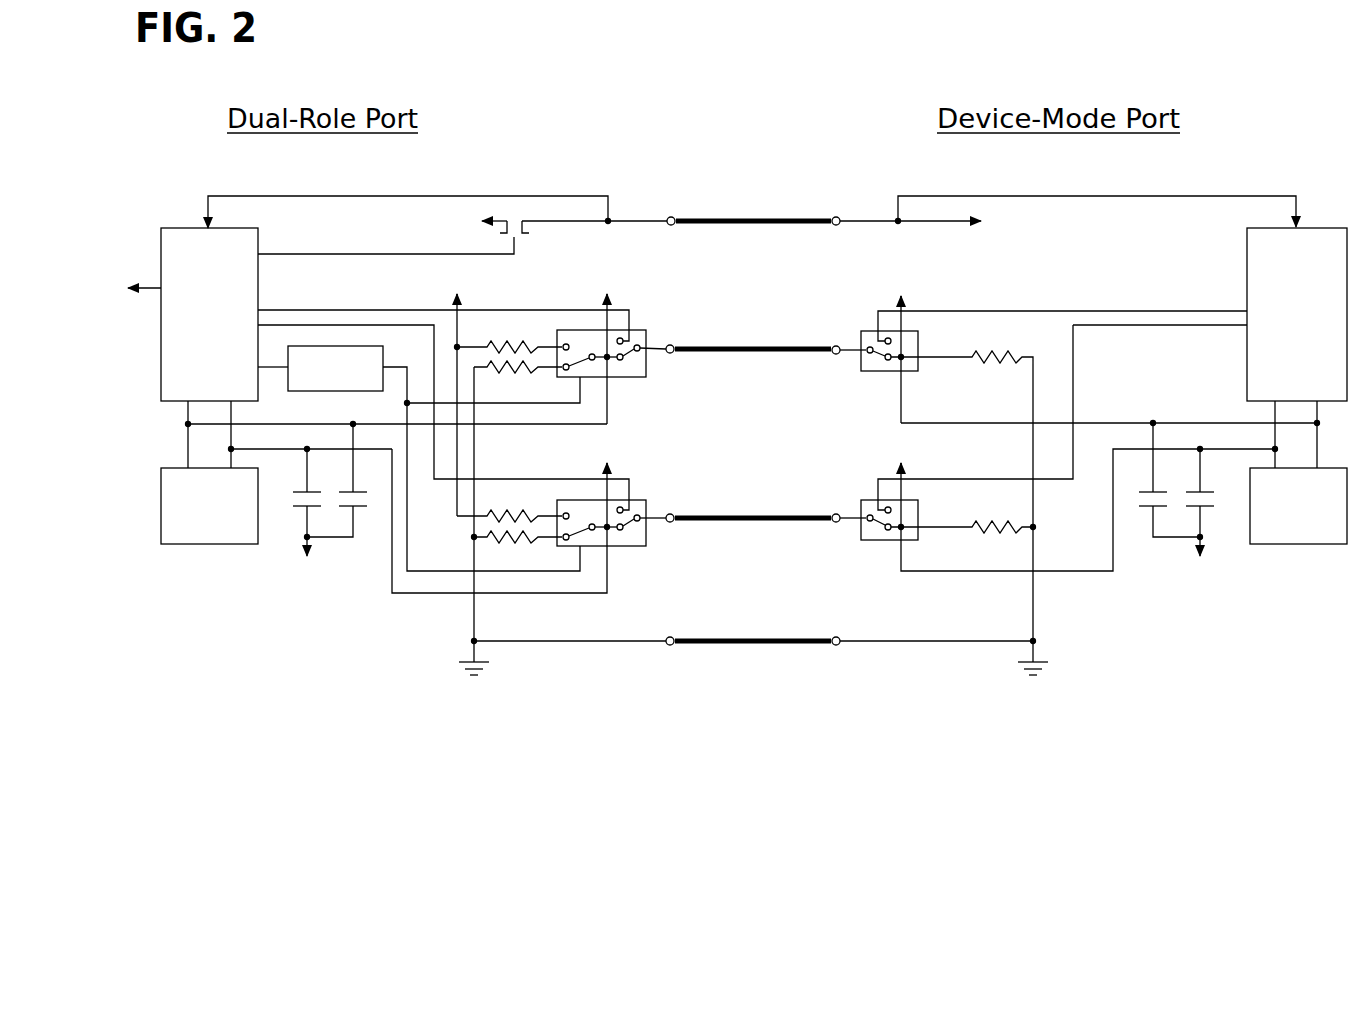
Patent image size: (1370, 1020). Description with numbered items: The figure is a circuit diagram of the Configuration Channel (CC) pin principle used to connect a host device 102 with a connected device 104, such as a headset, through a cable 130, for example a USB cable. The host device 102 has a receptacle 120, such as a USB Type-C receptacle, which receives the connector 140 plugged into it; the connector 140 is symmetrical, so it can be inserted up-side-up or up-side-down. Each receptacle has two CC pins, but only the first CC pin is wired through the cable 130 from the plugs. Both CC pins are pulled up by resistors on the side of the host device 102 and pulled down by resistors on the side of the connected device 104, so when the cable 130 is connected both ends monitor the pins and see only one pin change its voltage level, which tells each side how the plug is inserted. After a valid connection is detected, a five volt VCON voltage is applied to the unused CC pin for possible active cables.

The host device 102 is at (337, 755).
The connected device 104 is at (1069, 531).
The receptacle 120 is at (648, 686).
The cable 130 is at (763, 172).
The connector 140 is at (834, 686).